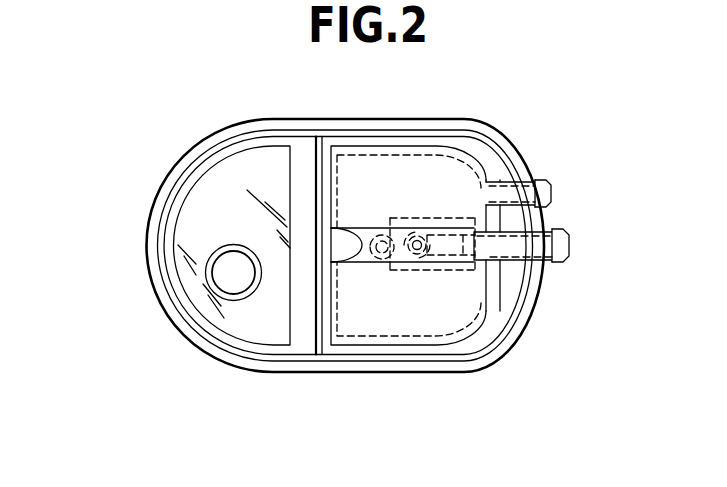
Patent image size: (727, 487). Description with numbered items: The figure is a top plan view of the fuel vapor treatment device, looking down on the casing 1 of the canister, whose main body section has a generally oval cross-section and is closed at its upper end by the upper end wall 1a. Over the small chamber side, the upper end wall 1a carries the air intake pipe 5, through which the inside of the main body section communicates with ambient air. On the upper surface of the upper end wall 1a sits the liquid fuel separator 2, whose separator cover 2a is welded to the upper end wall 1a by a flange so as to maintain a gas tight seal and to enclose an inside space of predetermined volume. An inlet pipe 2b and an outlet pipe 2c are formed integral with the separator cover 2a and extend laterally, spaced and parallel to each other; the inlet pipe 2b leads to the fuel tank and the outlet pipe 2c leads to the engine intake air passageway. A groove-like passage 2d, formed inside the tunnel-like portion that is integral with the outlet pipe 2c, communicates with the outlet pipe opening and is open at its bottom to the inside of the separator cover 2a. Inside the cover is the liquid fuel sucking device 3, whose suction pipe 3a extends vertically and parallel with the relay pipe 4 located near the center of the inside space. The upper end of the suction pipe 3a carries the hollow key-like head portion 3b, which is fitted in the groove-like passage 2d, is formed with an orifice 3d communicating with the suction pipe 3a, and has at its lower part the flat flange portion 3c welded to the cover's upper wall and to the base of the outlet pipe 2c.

The casing 1 is at (167, 182).
The upper end wall 1a is at (302, 344).
The liquid fuel separator 2 is at (413, 345).
The separator cover 2a is at (390, 312).
The inlet pipe 2b is at (520, 193).
The outlet pipe 2c is at (528, 242).
The groove-like passage 2d is at (362, 229).
The liquid fuel sucking device 3 is at (436, 273).
The suction pipe 3a is at (407, 273).
The key-like head portion 3b is at (450, 248).
The flange portion 3c is at (437, 220).
The orifice 3d is at (417, 236).
The relay pipe 4 is at (357, 263).
The air intake pipe 5 is at (217, 275).